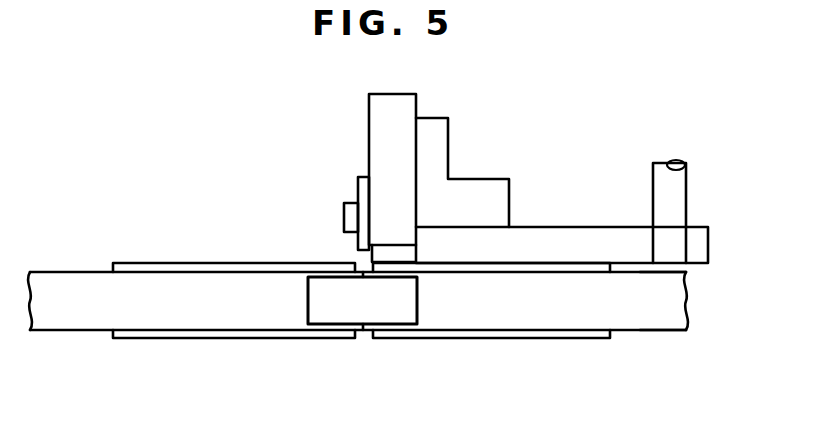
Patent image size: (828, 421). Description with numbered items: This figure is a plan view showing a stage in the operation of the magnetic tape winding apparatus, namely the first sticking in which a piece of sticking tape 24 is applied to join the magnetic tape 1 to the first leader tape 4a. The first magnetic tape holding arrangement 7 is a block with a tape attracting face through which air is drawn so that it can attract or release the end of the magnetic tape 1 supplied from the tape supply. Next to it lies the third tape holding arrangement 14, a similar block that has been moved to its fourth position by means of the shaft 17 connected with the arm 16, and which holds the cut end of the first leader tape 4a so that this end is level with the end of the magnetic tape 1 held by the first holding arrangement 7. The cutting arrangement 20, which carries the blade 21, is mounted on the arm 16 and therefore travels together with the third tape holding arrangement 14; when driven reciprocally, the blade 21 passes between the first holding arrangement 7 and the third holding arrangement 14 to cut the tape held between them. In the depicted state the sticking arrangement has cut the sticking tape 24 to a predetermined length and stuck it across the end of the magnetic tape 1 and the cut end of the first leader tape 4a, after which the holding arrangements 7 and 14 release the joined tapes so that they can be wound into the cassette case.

The magnetic tape 1 is at (79, 318).
The first magnetic tape holding arrangement 7 is at (246, 336).
The third tape holding arrangement 14 is at (550, 339).
The sticking tape 24 is at (392, 314).
The first leader tape 4a is at (646, 314).
The cutting arrangement 20 is at (365, 124).
The blade 21 is at (358, 180).
The arm 16 is at (584, 240).
The shaft 17 is at (675, 185).